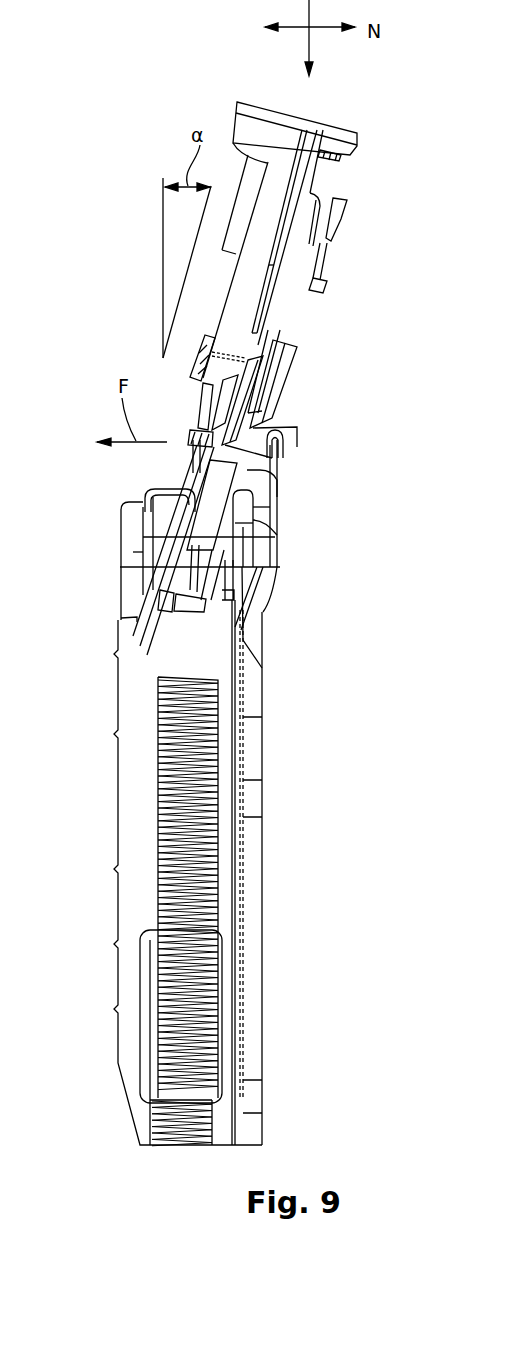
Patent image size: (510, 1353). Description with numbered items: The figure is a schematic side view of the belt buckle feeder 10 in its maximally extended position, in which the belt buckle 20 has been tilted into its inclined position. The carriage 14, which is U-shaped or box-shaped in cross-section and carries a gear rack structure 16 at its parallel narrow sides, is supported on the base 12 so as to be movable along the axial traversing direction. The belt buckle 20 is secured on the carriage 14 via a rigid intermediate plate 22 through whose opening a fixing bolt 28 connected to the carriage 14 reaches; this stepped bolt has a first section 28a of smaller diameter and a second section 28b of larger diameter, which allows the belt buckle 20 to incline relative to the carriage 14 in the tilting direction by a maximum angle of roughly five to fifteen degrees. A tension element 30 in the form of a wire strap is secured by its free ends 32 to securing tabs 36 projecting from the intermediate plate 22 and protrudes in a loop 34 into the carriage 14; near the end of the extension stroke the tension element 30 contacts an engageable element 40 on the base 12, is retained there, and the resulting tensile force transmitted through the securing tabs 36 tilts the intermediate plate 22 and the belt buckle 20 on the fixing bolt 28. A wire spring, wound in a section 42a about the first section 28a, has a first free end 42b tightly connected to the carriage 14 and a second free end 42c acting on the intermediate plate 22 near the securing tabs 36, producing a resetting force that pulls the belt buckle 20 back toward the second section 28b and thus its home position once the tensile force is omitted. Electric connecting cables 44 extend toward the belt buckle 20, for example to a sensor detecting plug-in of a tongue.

The belt buckle feeder 10 is at (133, 104).
The base 12 is at (140, 983).
The carriage 14 is at (112, 910).
The gear rack structure 16 is at (155, 832).
The belt buckle 20 is at (310, 222).
The intermediate plate 22 is at (221, 510).
The fixing bolt 28 is at (102, 531).
The first section 28a is at (248, 560).
The second section 28b is at (150, 557).
The tension element 30 is at (237, 895).
The free ends 32 is at (280, 450).
The loop 34 is at (157, 1070).
The securing tabs 36 is at (272, 428).
The engageable element 40 is at (195, 1100).
The section 42a is at (242, 533).
The first free end 42b is at (147, 500).
The second free end 42c is at (278, 473).
The electric connecting cables 44 is at (188, 481).